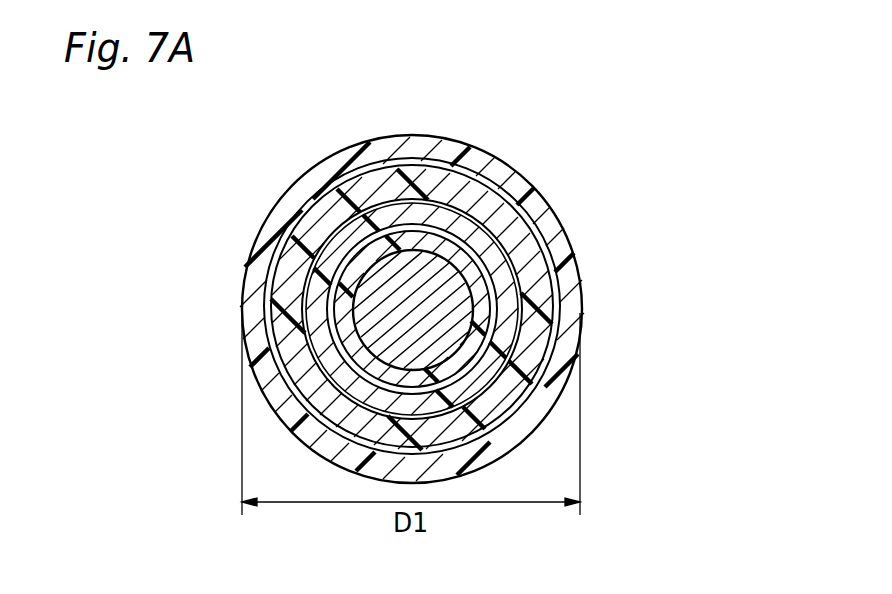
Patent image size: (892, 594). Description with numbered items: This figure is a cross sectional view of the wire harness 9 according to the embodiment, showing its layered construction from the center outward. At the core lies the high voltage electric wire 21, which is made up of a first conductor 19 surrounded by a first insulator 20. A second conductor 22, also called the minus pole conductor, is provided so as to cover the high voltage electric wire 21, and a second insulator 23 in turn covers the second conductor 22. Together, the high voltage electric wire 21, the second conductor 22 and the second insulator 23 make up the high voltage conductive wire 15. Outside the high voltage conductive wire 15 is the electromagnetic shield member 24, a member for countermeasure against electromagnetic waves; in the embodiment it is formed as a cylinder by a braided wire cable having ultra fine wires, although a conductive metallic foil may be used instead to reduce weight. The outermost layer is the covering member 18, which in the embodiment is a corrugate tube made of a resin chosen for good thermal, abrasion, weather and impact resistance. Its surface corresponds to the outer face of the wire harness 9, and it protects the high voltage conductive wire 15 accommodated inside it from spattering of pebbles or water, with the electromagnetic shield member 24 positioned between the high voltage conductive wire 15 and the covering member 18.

The wire harness 9 is at (230, 168).
The high voltage conductive wire 15 is at (708, 190).
The covering member 18 is at (512, 182).
The first conductor 19 is at (450, 283).
The first insulator 20 is at (480, 283).
The high voltage electric wire 21 is at (647, 173).
The second conductor 22 is at (510, 305).
The second insulator 23 is at (530, 327).
The electromagnetic shield member 24 is at (553, 350).